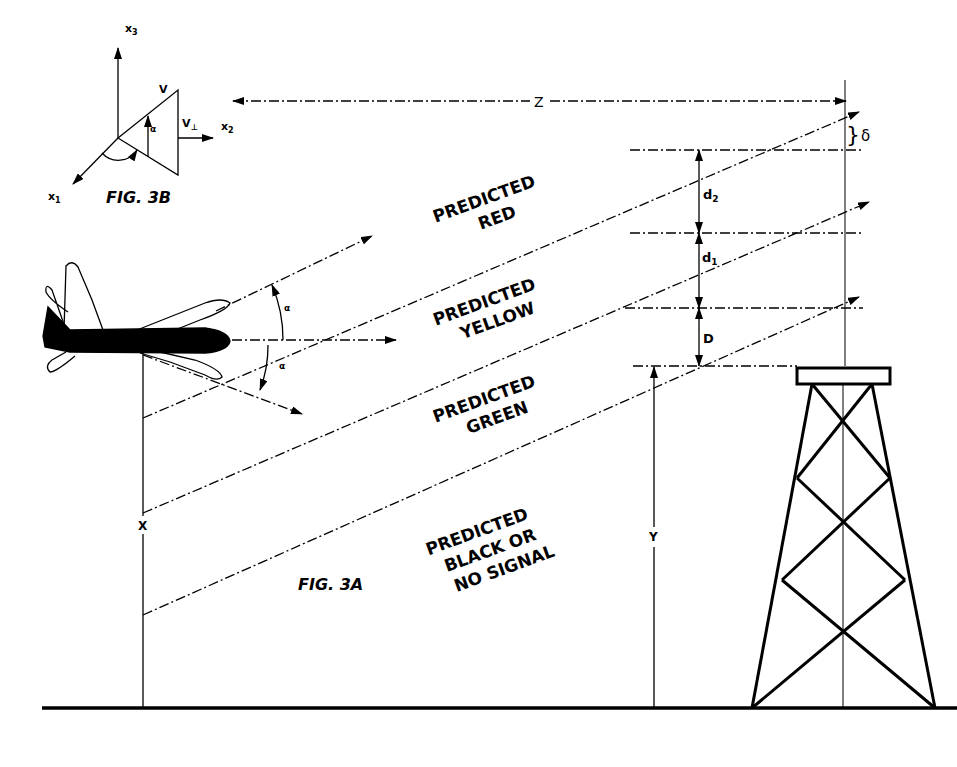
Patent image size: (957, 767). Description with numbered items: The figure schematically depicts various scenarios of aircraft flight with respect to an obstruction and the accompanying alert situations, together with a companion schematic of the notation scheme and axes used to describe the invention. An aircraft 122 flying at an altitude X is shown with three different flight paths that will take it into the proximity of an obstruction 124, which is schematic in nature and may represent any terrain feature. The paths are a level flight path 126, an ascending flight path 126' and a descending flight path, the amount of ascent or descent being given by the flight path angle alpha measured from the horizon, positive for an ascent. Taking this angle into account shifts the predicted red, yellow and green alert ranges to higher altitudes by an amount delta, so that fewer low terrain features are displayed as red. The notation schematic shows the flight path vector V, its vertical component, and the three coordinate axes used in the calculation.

The aircraft 122 is at (117, 330).
The obstruction 124 is at (892, 467).
The level flight path 126 is at (314, 324).
The ascending flight path 126' is at (294, 273).